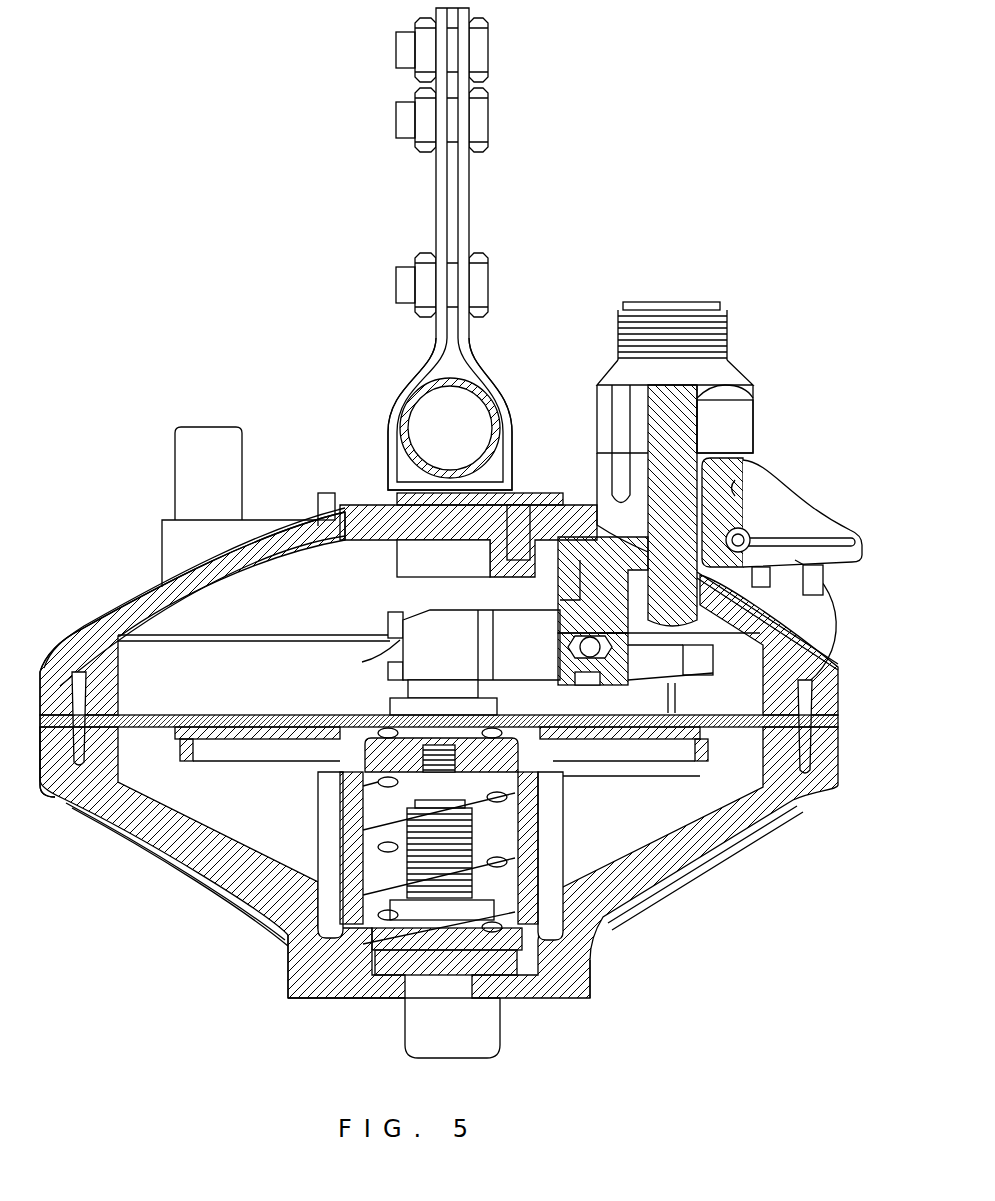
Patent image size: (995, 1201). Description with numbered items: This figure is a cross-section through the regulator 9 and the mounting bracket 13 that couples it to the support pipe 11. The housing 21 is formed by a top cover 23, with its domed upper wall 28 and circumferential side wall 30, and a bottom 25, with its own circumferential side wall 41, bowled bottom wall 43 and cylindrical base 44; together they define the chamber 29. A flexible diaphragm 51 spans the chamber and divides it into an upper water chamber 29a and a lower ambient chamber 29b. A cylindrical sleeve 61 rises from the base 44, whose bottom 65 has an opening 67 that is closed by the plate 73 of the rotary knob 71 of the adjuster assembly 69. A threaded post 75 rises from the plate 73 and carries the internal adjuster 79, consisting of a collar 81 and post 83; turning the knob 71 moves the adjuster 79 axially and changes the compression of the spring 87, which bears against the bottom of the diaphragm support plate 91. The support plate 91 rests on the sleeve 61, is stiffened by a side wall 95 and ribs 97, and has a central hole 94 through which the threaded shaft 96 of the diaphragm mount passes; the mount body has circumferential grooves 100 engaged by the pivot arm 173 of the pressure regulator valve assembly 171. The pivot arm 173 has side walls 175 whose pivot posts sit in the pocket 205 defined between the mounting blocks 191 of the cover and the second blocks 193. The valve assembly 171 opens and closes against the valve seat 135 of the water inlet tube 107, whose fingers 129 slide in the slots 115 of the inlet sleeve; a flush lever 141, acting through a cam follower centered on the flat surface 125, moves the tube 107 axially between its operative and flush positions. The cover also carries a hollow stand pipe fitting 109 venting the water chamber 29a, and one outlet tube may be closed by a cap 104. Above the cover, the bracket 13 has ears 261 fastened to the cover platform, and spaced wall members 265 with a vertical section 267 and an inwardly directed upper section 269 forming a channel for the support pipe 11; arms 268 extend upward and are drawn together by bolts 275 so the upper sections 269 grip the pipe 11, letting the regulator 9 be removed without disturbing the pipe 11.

The regulator 9 is at (234, 375).
The support pipe 11 is at (495, 412).
The mounting bracket 13 is at (545, 72).
The housing 21 is at (85, 598).
The top cover 23 is at (120, 614).
The bottom 25 is at (147, 856).
The domed upper wall 28 is at (272, 538).
The chamber 29 is at (153, 664).
The upper water chamber 29a is at (197, 624).
The lower ambient chamber 29b is at (253, 845).
The circumferential side wall 30 is at (38, 700).
The circumferential side wall 41 is at (58, 790).
The bottom wall 43 is at (730, 852).
The cylindrical base 44 is at (600, 956).
The flexible diaphragm 51 is at (175, 713).
The cylindrical sleeve 61 is at (560, 856).
The bottom 65 is at (358, 999).
The opening 67 is at (474, 990).
The adjuster assembly 69 is at (608, 906).
The rotary knob 71 is at (500, 1040).
The plate 73 is at (304, 999).
The threaded post 75 is at (540, 824).
The internal adjuster 79 is at (556, 972).
The collar 81 is at (370, 943).
The post 83 is at (320, 876).
The spring 87 is at (322, 804).
The diaphragm support plate 91 is at (720, 762).
The hole 94 is at (386, 626).
The side wall 95 is at (708, 738).
The threaded shaft 96 is at (395, 716).
The ribs 97 is at (272, 752).
The circumferential grooves 100 is at (358, 660).
The cap 104 is at (802, 636).
The water inlet tube 107 is at (757, 372).
The stand pipe fitting 109 is at (172, 468).
The slots 115 is at (620, 498).
The flat surface 125 is at (745, 422).
The fingers 129 is at (620, 470).
The valve seat 135 is at (766, 641).
The flush lever 141 is at (782, 480).
The pressure regulator valve assembly 171 is at (712, 684).
The pivot arm 173 is at (517, 606).
The side walls 175 is at (592, 660).
The mounting blocks 191 is at (547, 582).
The second blocks 193 is at (562, 674).
The pocket 205 is at (560, 652).
The ears 261 is at (527, 526).
The wall members 265 is at (393, 422).
The vertical section 267 is at (513, 472).
The arms 268 is at (468, 191).
The inwardly directed upper section 269 is at (488, 376).
The bolts 275 is at (488, 52).